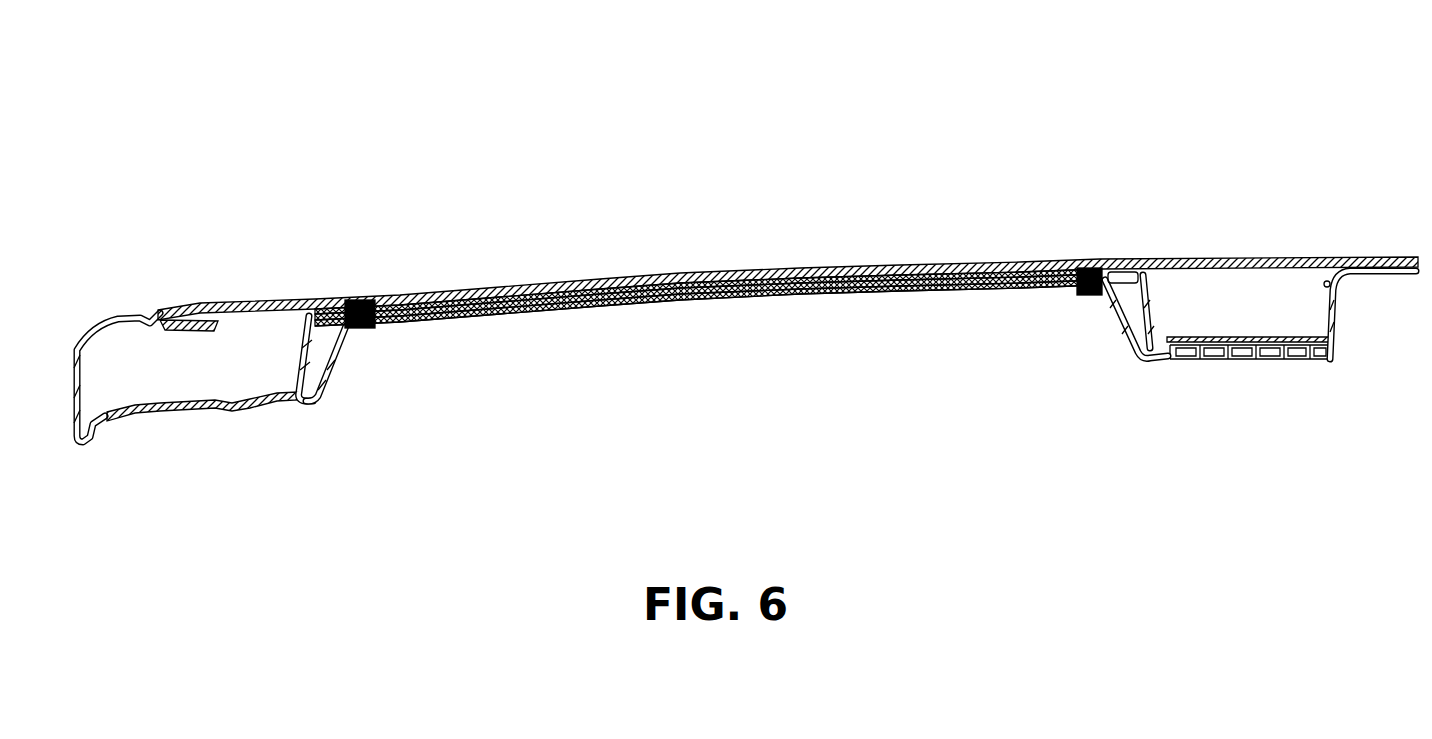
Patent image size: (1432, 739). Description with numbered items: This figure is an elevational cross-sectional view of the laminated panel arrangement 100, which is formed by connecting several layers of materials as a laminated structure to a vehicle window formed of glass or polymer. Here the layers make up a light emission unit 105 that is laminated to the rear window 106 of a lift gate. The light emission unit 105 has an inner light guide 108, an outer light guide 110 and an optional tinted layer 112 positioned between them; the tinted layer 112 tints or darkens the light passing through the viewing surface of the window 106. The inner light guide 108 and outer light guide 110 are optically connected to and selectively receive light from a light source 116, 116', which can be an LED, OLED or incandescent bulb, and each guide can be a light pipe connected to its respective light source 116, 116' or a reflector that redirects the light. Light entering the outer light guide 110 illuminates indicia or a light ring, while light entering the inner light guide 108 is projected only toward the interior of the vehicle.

The laminated panel arrangement 100 is at (1036, 106).
The light emission unit 105 is at (1062, 304).
The rear window 106 is at (1072, 262).
The inner light guide 108 is at (530, 312).
The outer light guide 110 is at (518, 288).
The tinted layer 112 is at (457, 315).
The light source 116 is at (355, 370).
The light source 116' is at (1122, 338).